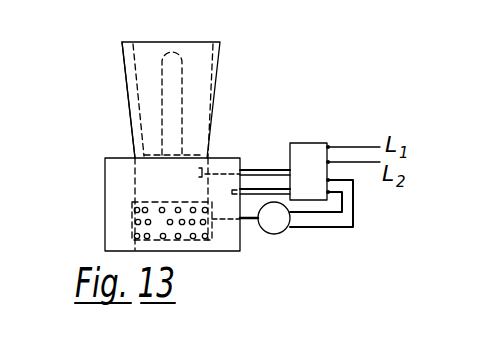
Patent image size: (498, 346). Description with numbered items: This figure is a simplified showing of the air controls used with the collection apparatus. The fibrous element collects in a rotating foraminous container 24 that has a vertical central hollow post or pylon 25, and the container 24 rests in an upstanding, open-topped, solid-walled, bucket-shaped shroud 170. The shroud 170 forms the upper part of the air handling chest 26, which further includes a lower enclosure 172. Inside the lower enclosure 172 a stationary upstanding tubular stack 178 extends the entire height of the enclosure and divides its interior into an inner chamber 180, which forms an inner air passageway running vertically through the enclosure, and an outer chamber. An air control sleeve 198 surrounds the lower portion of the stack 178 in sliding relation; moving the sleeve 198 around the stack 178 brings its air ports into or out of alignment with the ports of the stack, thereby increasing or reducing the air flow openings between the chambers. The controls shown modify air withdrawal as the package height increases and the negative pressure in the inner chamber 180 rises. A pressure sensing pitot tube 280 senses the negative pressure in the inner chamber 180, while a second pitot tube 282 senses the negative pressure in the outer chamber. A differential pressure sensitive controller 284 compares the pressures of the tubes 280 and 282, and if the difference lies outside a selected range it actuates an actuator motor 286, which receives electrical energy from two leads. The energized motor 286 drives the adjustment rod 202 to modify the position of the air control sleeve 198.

The air handling chest 26 is at (117, 37).
The rotating foraminous container 24 is at (133, 61).
The vertical central hollow post or pylon 25 is at (181, 54).
The shroud 170 is at (125, 80).
The inner chamber 180 is at (170, 175).
The lower enclosure 172 is at (105, 160).
The stack 178 is at (133, 178).
The air control sleeve 198 is at (132, 208).
The adjustment rod 202 is at (253, 225).
The pressure sensing pitot tube 280 is at (272, 170).
The pressure sensing pitot tube 282 is at (250, 188).
The differential pressure sensitive controller 284 is at (306, 143).
The actuator motor 286 is at (285, 237).